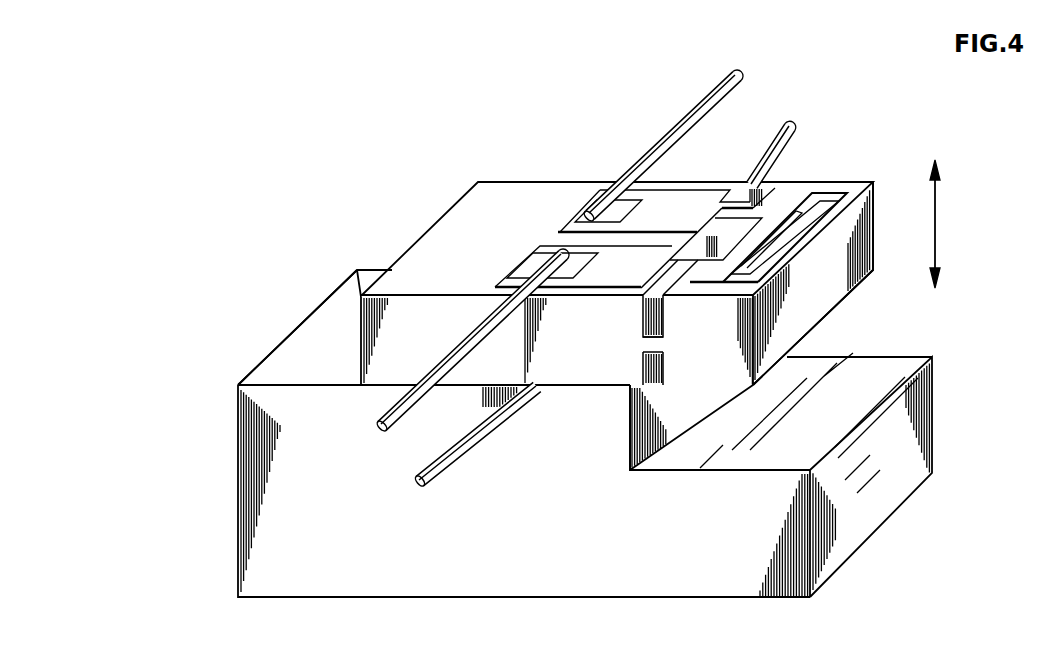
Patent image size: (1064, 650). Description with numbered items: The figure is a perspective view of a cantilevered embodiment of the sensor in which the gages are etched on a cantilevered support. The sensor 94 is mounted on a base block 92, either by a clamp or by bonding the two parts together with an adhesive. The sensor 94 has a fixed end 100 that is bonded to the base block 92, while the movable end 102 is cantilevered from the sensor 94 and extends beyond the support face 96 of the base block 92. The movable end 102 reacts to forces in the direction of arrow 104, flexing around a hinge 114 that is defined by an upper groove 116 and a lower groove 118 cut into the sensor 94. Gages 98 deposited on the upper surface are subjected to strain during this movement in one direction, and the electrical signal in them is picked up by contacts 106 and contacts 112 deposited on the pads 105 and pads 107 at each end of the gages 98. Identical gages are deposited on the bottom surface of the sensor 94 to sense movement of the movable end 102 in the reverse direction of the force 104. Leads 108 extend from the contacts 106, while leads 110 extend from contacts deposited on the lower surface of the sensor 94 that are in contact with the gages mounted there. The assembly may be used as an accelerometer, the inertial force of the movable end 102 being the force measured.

The base block 92 is at (272, 446).
The sensor 94 is at (604, 374).
The upper surface of base 96 is at (353, 383).
The gages 98 is at (800, 192).
The fixed end 100 is at (447, 238).
The movable end 102 is at (828, 273).
The arrow 104 is at (937, 208).
The pads 105 is at (686, 197).
The contacts 106 is at (593, 213).
The pads 107 is at (823, 198).
The leads 108 is at (702, 95).
The leads 110 is at (790, 128).
The contacts 112 is at (787, 216).
The hinge 114 is at (652, 343).
The upper groove 116 is at (655, 313).
The lower groove 118 is at (655, 366).